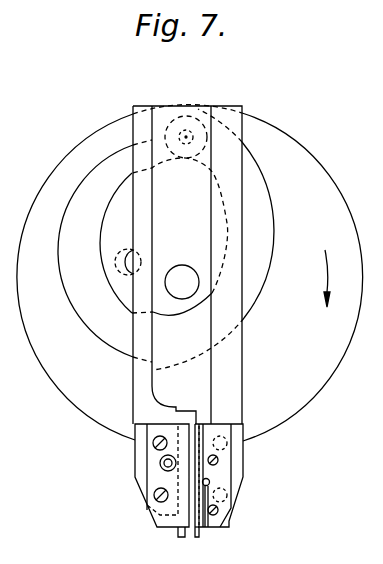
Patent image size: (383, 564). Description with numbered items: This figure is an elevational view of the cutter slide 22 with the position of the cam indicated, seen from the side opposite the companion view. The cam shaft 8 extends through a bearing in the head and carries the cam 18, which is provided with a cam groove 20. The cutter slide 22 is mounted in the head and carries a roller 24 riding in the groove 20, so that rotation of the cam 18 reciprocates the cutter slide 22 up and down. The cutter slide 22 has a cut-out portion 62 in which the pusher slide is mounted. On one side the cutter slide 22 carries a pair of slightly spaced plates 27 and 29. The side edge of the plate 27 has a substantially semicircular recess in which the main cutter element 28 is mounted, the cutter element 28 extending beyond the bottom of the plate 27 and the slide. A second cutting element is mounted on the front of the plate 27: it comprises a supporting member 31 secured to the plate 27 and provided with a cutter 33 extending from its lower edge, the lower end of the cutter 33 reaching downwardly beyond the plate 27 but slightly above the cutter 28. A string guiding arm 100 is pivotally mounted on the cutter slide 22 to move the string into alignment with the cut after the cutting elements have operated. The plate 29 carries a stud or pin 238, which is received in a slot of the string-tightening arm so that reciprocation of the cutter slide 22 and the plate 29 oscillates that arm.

The cam 18 is at (332, 183).
The cam groove 20 is at (263, 258).
The cutter slide 22 is at (233, 200).
The cut-out portion 62 is at (152, 188).
The roller 24 is at (190, 128).
The cam shaft 8 is at (182, 276).
The plate 29 is at (147, 427).
The stud or pin 238 is at (162, 466).
The string guiding arm 100 is at (180, 536).
The plate 27 is at (231, 435).
The supporting member 31 is at (231, 473).
The cutter 33 is at (196, 538).
The main cutter element 28 is at (200, 537).